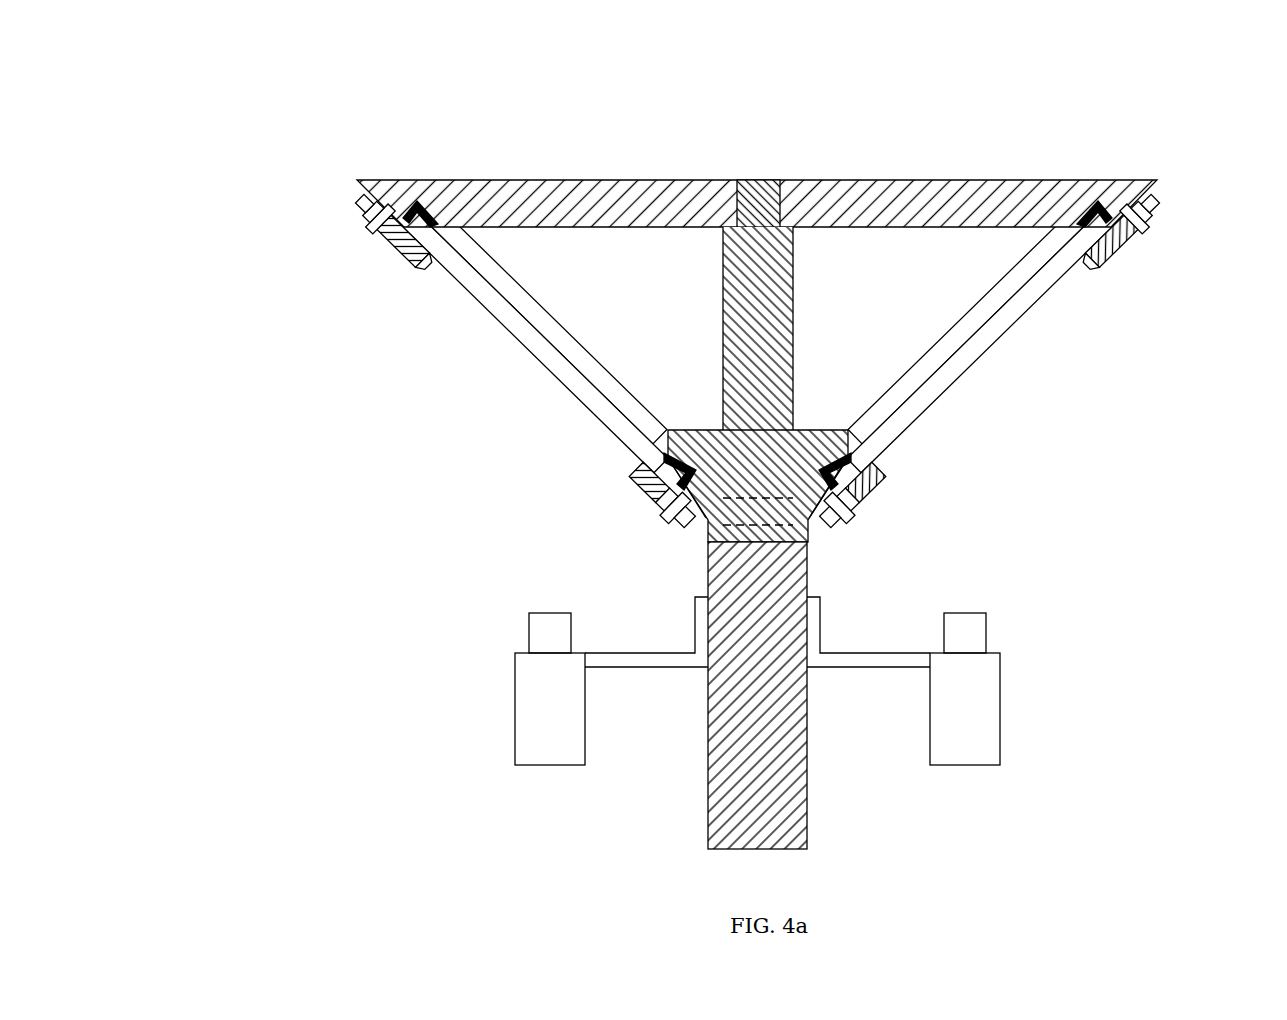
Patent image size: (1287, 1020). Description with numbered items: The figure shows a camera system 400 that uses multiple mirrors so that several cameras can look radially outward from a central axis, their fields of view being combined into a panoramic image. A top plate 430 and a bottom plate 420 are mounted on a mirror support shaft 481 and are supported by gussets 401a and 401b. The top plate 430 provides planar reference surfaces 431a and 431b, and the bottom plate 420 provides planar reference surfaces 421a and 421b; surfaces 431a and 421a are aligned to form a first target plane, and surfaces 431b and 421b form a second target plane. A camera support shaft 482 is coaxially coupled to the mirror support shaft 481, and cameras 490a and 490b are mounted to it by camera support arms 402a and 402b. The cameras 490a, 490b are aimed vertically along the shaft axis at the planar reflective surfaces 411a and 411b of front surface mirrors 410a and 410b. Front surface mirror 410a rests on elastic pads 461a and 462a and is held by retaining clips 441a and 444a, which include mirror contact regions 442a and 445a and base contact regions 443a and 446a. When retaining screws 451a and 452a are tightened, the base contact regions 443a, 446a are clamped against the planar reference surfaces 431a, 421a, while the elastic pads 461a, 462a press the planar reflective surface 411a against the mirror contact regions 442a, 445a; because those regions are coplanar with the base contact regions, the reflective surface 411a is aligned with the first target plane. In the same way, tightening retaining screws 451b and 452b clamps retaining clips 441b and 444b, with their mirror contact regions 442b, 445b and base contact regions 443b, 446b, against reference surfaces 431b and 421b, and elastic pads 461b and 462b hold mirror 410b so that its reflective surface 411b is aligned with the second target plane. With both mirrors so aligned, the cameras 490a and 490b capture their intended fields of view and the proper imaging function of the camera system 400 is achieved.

The camera system 400 is at (190, 125).
The top plate 430 is at (572, 180).
The mirror support shaft 481 is at (762, 180).
The gusset 401a is at (707, 344).
The gusset 401b is at (860, 344).
The bottom plate 420 is at (850, 432).
The camera support shaft 482 is at (808, 790).
The front surface mirror 410a is at (472, 281).
The front surface mirror 410b is at (1043, 281).
The planar reflective surface 411a is at (513, 338).
The planar reflective surface 411b is at (1002, 338).
The elastic pad 461a is at (420, 203).
The elastic pad 461b is at (1097, 203).
The elastic pad 462a is at (662, 460).
The elastic pad 462b is at (852, 460).
The planar reference surface 431a is at (372, 204).
The planar reference surface 431b is at (1142, 204).
The base contact region 443a is at (366, 224).
The base contact region 443b is at (1148, 224).
The retaining screw 451a is at (378, 232).
The retaining screw 451b is at (1136, 232).
The retaining clip 441a is at (396, 248).
The retaining clip 441b is at (1118, 248).
The mirror contact region 442a is at (414, 264).
The mirror contact region 442b is at (1100, 264).
The mirror contact region 445a is at (648, 480).
The mirror contact region 445b is at (866, 480).
The retaining clip 444a is at (662, 500).
The retaining clip 444b is at (852, 500).
The retaining screw 452a is at (676, 512).
The retaining screw 452b is at (838, 512).
The base contact region 446a is at (690, 522).
The base contact region 446b is at (824, 522).
The planar reference surface 421a is at (704, 528).
The planar reference surface 421b is at (810, 528).
The camera 490a is at (574, 750).
The camera 490b is at (993, 750).
The camera support arm 402a is at (611, 668).
The camera support arm 402b is at (904, 668).